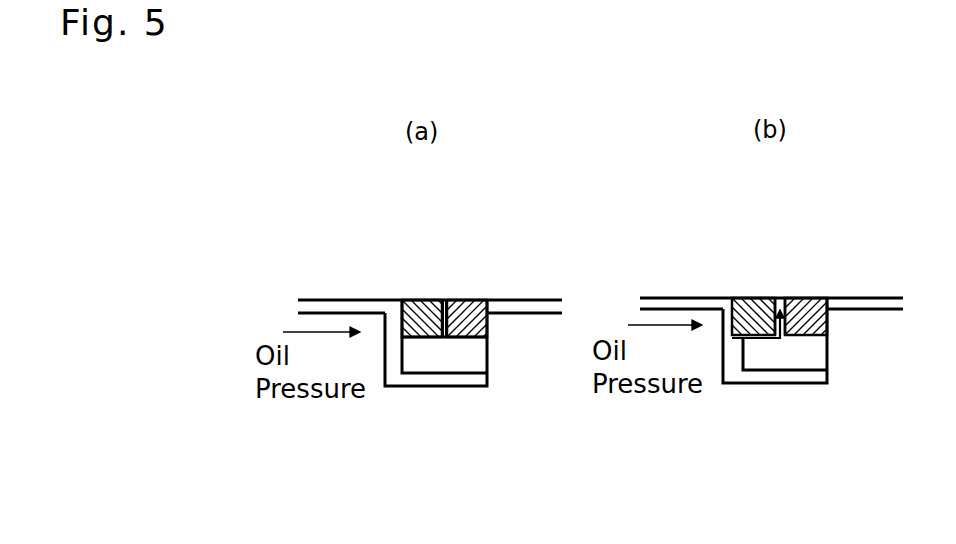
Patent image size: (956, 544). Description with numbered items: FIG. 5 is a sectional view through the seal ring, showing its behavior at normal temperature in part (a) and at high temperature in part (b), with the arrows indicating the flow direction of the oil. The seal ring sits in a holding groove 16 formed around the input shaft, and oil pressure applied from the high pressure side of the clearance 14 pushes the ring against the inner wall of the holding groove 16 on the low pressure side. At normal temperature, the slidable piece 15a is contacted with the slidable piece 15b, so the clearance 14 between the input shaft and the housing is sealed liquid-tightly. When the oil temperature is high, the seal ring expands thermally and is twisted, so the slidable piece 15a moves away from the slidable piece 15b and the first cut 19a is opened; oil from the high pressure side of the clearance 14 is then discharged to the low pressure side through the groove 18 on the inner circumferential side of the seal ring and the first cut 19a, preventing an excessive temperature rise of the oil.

The clearance 14 is at (335, 310).
The slidable piece 15a is at (428, 300).
The slidable piece 15b is at (473, 302).
The first cut 19a is at (447, 300).
The groove 18 is at (463, 360).
The holding groove 16 is at (428, 387).